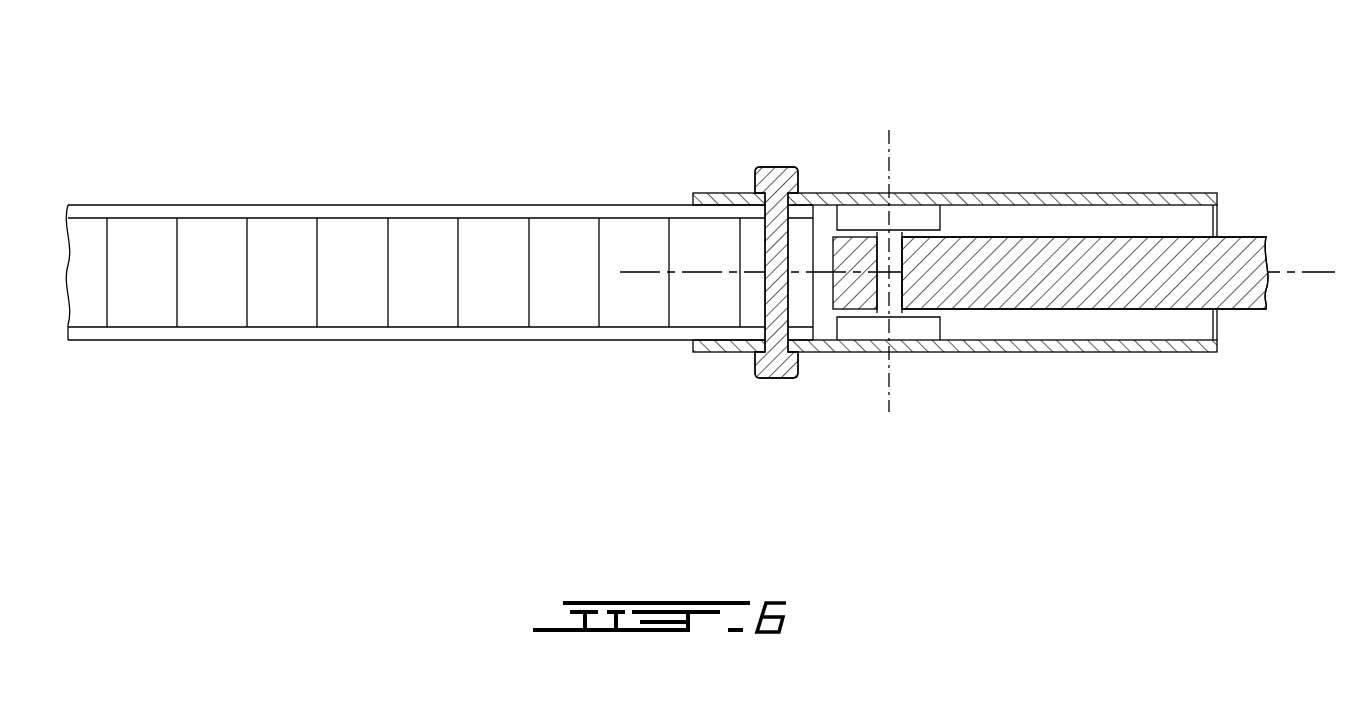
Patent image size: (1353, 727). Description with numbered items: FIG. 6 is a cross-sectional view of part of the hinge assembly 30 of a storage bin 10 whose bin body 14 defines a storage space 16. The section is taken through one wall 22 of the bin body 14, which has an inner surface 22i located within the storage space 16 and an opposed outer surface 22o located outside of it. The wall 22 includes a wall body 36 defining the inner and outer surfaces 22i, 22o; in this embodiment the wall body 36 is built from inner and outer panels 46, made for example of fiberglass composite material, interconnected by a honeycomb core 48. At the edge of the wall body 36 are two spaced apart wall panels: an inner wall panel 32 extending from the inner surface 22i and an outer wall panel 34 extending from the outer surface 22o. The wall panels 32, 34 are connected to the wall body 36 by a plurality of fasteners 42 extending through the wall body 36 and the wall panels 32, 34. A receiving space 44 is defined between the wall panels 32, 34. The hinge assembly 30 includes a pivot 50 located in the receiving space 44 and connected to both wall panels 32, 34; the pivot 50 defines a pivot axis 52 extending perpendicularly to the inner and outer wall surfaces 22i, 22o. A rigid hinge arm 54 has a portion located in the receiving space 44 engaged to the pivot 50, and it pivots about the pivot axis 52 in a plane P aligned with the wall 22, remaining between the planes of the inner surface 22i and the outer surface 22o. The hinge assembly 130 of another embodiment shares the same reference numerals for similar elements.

The storage bin 10 is at (695, 305).
The bin body 14 is at (439, 305).
The storage space 16 is at (626, 125).
The wall 22 is at (439, 319).
The inner surface 22i is at (440, 205).
The outer surface 22o is at (413, 342).
The wall body 36 is at (352, 287).
The inner and outer panels 46 is at (296, 333).
The honeycomb core 48 is at (565, 270).
The fasteners 42 is at (771, 167).
The hinge assembly 30 is at (980, 259).
The hinge assembly 130 is at (980, 259).
The inner wall panel 32 is at (1133, 195).
The outer wall panel 34 is at (1107, 353).
The receiving space 44 is at (1053, 225).
The pivot 50 is at (906, 289).
The pivot axis 52 is at (888, 399).
The hinge arm 54 is at (1228, 252).
The plane P is at (1320, 268).